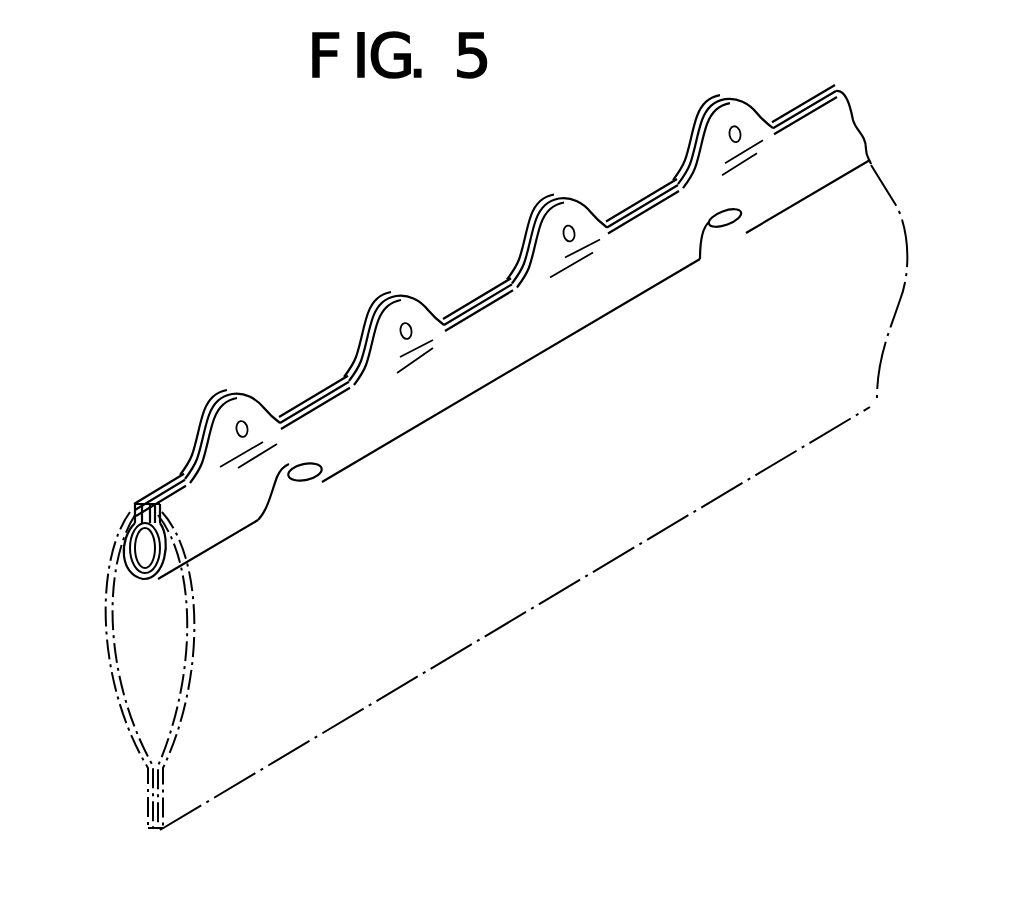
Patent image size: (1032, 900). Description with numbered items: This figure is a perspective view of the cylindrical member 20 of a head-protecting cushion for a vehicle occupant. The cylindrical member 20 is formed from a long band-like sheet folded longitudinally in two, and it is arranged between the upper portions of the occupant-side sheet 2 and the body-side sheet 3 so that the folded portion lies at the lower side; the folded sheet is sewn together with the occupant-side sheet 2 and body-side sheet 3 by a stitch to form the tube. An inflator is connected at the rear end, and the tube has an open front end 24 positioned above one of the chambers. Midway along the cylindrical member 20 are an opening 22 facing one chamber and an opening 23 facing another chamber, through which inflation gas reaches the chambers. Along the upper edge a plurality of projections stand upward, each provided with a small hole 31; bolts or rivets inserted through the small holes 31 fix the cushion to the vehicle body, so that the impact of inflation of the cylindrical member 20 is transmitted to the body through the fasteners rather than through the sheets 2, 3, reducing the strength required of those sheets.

The occupant-side sheet 2 is at (290, 732).
The body-side sheet 3 is at (103, 652).
The cylindrical member 20 is at (312, 359).
The opening 22 is at (713, 242).
The opening 23 is at (292, 488).
The open front end 24 is at (146, 578).
The small holes 31 is at (241, 420).